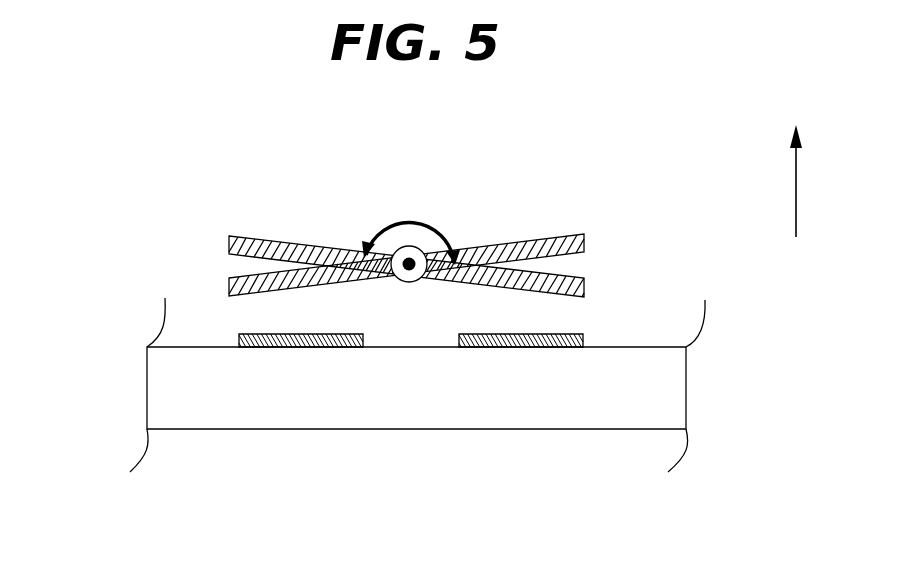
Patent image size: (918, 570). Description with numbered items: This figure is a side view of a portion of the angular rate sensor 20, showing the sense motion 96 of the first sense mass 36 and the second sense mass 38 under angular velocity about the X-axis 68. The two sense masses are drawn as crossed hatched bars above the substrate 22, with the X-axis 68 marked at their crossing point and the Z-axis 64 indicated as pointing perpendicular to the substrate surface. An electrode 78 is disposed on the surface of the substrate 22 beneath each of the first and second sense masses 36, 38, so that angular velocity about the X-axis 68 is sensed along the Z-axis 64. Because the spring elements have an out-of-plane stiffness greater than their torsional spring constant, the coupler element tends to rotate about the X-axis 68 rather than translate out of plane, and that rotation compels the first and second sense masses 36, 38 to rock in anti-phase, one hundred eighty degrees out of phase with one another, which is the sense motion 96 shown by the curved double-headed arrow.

The angular rate sensor 20 is at (410, 533).
The substrate 22 is at (162, 379).
The first sense mass 36 is at (568, 236).
The second sense mass 38 is at (280, 238).
The Z-axis 64 is at (795, 193).
The X-axis 68 is at (410, 258).
The electrode 78 is at (253, 332).
The sense motion 96 is at (400, 222).